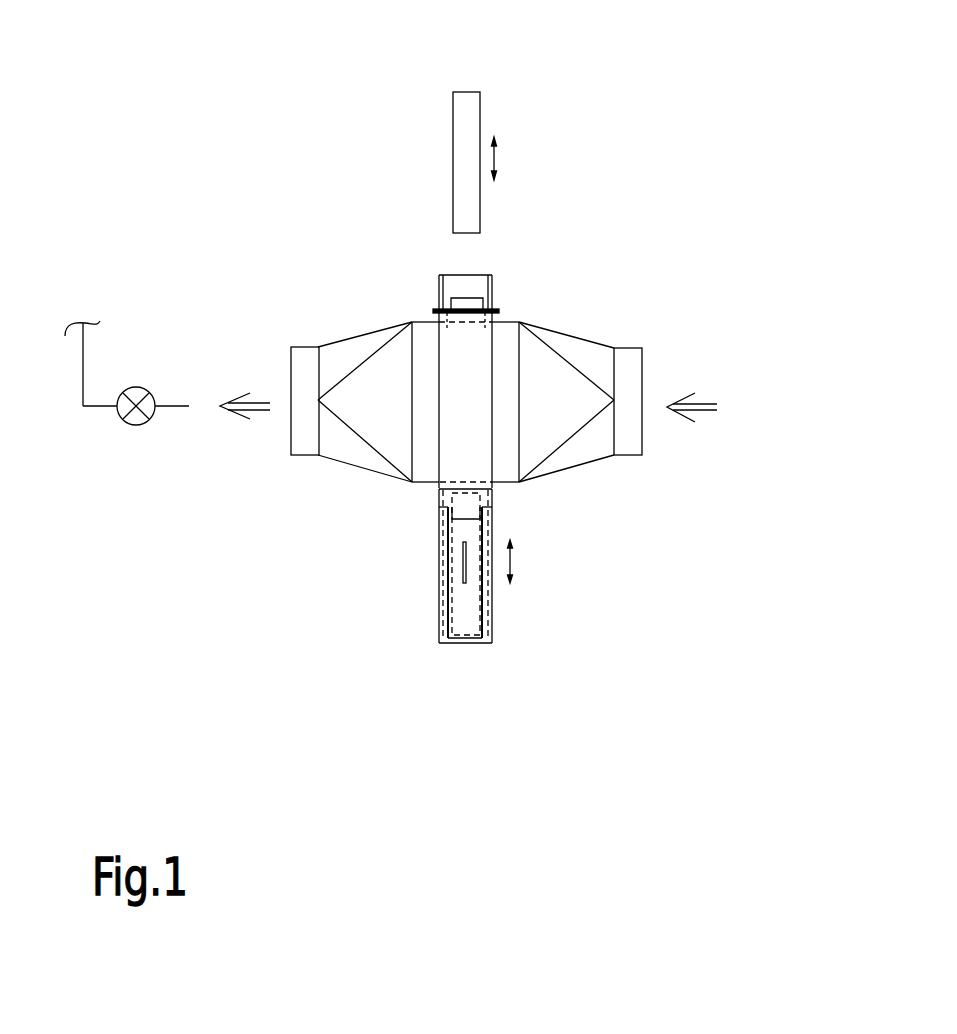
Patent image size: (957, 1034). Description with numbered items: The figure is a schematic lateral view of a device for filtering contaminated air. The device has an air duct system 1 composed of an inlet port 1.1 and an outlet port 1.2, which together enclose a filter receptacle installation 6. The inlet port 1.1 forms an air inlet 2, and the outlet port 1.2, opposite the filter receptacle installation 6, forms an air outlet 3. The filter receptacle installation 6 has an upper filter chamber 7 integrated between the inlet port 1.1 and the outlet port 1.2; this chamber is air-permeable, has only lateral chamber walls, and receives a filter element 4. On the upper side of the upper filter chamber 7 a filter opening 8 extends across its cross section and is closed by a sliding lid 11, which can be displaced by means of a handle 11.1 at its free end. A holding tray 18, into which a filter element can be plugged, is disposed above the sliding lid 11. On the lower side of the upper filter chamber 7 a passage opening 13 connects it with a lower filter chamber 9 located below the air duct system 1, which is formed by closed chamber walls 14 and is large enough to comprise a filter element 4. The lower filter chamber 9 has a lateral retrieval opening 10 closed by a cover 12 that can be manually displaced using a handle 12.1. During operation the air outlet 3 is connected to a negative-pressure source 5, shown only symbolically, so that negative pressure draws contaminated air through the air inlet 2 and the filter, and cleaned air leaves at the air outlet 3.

The air duct system 1 is at (193, 558).
The inlet port 1.1 is at (545, 417).
The outlet port 1.2 is at (372, 403).
The air inlet 2 is at (640, 365).
The air outlet 3 is at (291, 363).
The filter element 4 is at (508, 78).
The negative-pressure source 5 is at (137, 422).
The filter receptacle installation 6 is at (530, 288).
The upper filter chamber 7 is at (463, 368).
The filter opening 8 is at (433, 314).
The lower filter chamber 9 is at (493, 610).
The retrieval opening 10 is at (480, 519).
The sliding lid 11 is at (456, 308).
The handle 11.1 is at (463, 297).
The cover 12 is at (470, 627).
The handle 12.1 is at (463, 564).
The passage opening 13 is at (480, 485).
The closed chamber walls 14 is at (438, 605).
The holding tray 18 is at (443, 277).